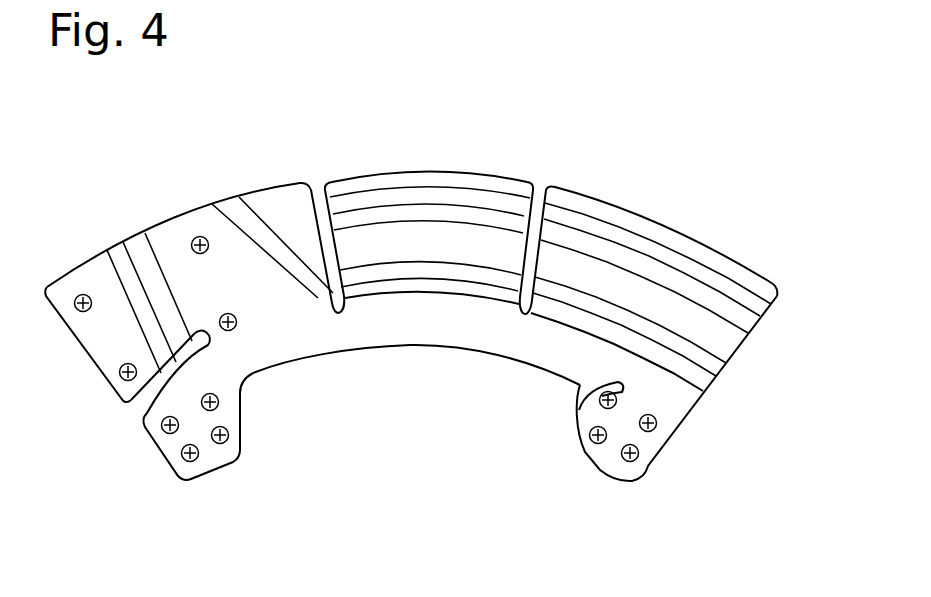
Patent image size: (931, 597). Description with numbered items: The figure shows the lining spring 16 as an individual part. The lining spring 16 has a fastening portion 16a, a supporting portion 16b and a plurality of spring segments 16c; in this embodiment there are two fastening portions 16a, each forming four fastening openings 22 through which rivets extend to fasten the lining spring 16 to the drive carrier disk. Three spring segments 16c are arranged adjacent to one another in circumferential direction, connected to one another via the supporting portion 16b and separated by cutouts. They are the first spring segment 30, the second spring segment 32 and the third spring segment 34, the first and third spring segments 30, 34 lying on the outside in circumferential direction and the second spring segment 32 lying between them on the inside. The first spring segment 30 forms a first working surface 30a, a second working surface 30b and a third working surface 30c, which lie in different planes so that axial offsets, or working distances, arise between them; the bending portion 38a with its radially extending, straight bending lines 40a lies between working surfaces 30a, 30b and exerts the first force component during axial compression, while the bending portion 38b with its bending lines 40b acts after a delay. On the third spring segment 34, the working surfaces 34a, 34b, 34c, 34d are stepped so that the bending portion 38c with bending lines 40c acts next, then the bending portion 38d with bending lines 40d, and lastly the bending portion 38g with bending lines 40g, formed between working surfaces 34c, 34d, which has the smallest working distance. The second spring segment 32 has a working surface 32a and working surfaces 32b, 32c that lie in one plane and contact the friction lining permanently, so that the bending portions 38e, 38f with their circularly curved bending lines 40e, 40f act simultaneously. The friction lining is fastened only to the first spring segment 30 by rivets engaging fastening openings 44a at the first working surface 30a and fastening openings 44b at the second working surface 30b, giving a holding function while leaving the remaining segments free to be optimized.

The lining spring 16 is at (423, 307).
The fastening portion 16a is at (183, 433).
The supporting portion 16b is at (450, 344).
The spring segments 16c is at (207, 185).
The fastening openings 22 is at (219, 404).
The first spring segment 30 is at (184, 254).
The first working surface 30a is at (83, 346).
The second working surface 30b is at (238, 306).
The third working surface 30c is at (288, 212).
The second spring segment 32 is at (457, 260).
The working surface 32a is at (445, 258).
The working surface 32b is at (390, 307).
The working surface 32c is at (367, 177).
The third spring segment 34 is at (650, 318).
The working surface 34a is at (637, 327).
The working surface 34b is at (562, 358).
The working surface 34c is at (740, 333).
The working surface 34d is at (733, 270).
The bending portion 38a is at (114, 196).
The bending portion 38b is at (229, 178).
The bending portion 38c is at (712, 416).
The bending portion 38d is at (757, 356).
The bending portion 38e is at (520, 320).
The bending portion 38f is at (514, 212).
The bending portion 38g is at (779, 298).
The bending lines 40a is at (130, 260).
The bending lines 40b is at (238, 223).
The bending lines 40c is at (683, 372).
The bending lines 40d is at (741, 338).
The bending lines 40e is at (497, 270).
The bending lines 40f is at (463, 227).
The bending lines 40g is at (686, 290).
The fastening openings 44a is at (76, 298).
The fastening openings 44b is at (197, 238).